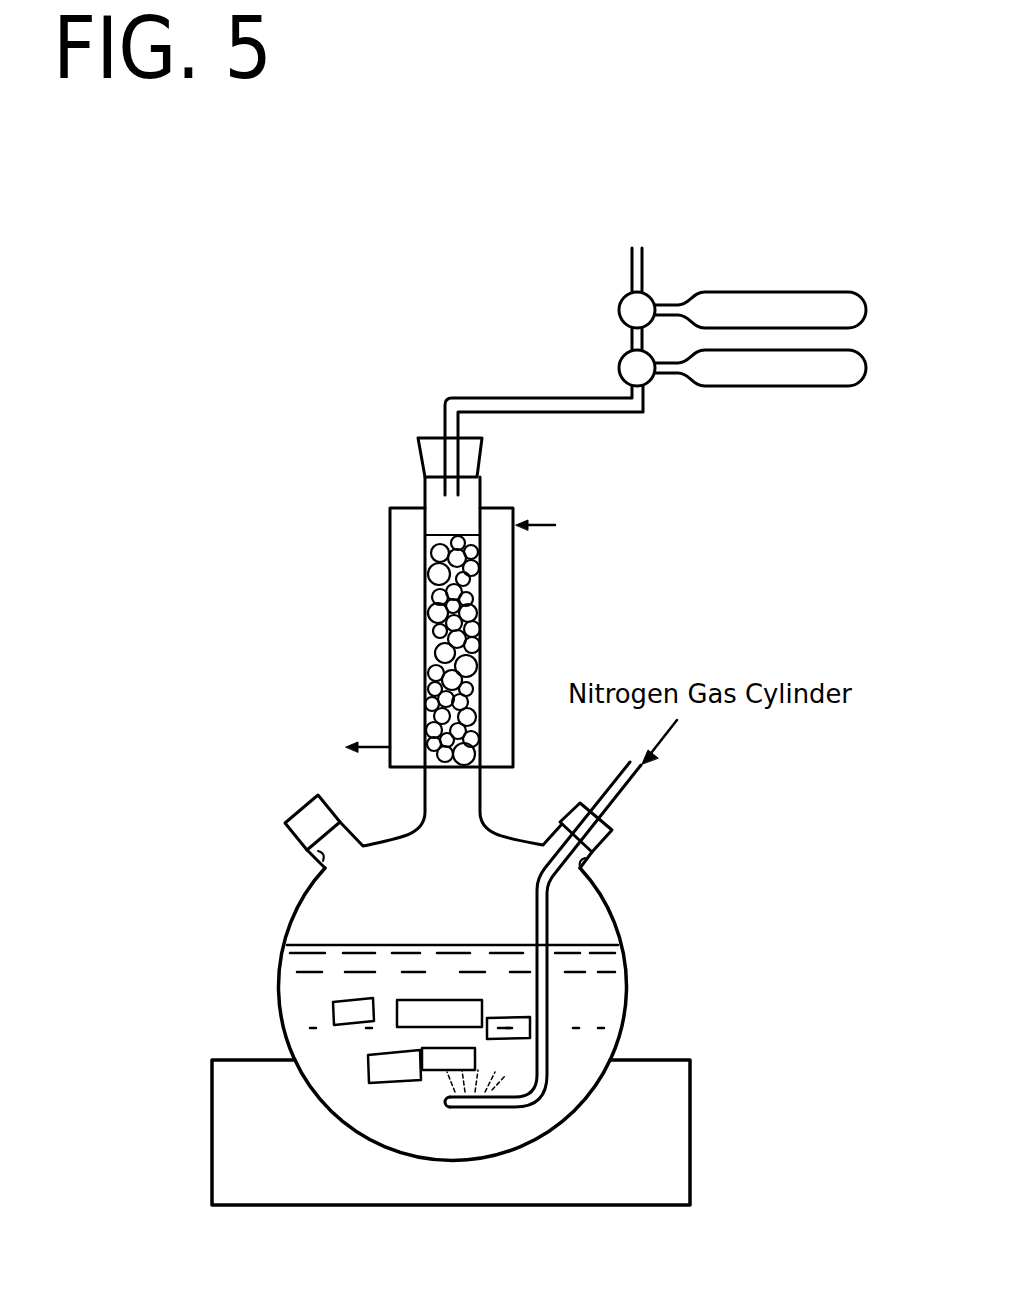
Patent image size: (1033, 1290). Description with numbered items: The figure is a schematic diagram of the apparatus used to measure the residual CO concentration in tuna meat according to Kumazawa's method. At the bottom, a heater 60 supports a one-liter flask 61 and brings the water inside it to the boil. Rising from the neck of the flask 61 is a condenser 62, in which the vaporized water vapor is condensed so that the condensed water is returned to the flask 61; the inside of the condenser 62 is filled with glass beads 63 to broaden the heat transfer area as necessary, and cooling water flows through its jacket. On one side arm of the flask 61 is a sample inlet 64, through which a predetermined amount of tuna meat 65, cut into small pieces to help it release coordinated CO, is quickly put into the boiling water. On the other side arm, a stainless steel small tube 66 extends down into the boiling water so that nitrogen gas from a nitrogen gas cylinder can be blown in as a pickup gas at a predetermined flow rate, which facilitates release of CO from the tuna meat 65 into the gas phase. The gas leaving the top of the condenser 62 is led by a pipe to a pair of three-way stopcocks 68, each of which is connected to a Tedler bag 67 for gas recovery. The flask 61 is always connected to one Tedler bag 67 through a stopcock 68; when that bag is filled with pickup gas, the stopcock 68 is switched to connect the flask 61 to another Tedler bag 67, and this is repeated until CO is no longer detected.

The heater 60 is at (690, 1123).
The flask 61 is at (603, 912).
The condenser 62 is at (513, 630).
The glass beads 63 is at (432, 635).
The sample inlet 64 is at (318, 868).
The tuna meat 65 is at (345, 1007).
The stainless steel small tube 66 is at (543, 988).
The Tedler bag 67 is at (766, 292).
The three-way stopcock 68 is at (620, 301).